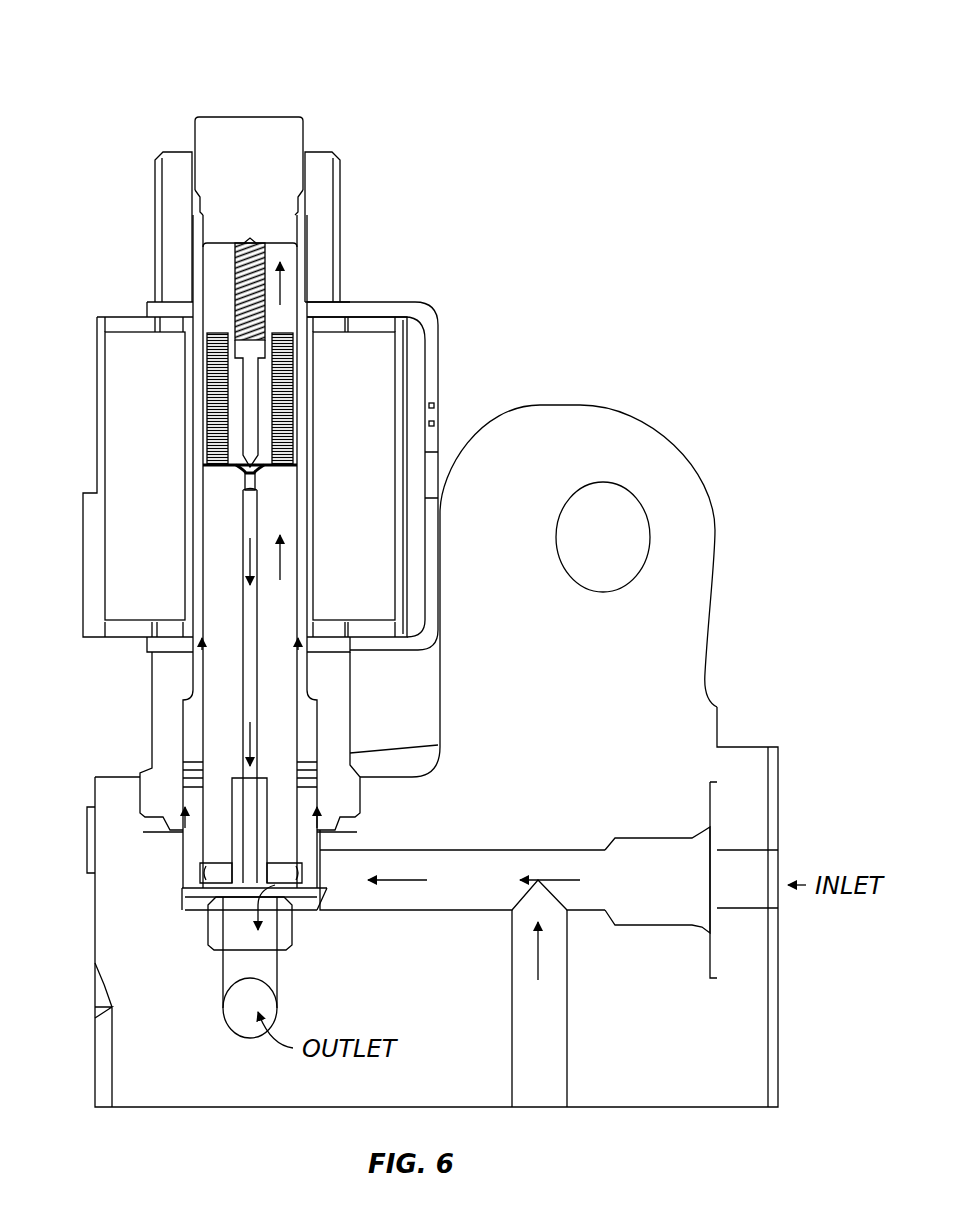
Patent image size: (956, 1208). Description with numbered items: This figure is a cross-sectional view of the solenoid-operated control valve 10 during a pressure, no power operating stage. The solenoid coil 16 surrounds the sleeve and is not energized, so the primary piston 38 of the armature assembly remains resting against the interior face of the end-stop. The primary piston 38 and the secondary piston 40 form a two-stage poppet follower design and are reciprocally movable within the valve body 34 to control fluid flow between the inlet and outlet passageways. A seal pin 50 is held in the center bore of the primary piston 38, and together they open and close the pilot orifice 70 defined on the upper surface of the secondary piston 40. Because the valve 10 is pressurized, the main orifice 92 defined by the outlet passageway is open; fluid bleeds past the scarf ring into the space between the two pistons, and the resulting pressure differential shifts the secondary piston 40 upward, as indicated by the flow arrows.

The solenoid-operated control valve 10 is at (290, 57).
The solenoid coil 16 is at (405, 398).
The valve body 34 is at (302, 285).
The primary piston 38 is at (212, 272).
The secondary piston 40 is at (217, 622).
The seal pin 50 is at (263, 388).
The pilot orifice 70 is at (220, 483).
The main orifice 92 is at (205, 893).